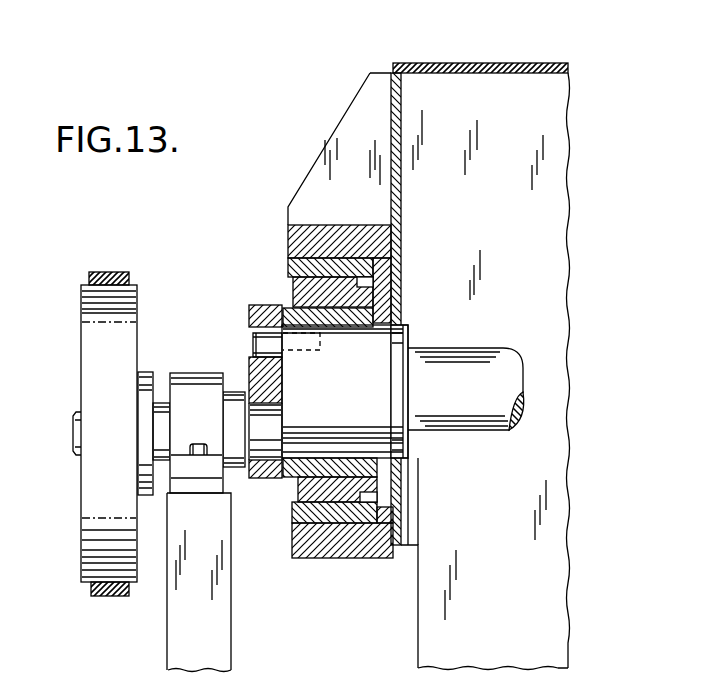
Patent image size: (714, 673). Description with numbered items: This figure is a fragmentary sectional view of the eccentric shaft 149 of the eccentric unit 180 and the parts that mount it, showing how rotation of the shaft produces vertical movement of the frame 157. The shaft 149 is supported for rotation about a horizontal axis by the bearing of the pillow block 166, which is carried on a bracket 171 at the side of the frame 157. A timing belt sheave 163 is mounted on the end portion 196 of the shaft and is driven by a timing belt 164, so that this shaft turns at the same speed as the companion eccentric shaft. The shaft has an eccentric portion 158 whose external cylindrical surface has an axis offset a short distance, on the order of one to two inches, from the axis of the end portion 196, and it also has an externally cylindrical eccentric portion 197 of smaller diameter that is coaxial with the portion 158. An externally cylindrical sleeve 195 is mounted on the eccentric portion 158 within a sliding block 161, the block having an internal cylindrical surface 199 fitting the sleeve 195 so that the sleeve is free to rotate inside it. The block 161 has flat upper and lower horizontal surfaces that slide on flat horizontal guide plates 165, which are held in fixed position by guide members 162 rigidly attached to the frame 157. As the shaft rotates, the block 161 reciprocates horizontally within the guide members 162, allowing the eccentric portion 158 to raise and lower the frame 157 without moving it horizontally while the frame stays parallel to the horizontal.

The eccentric shaft 149 is at (501, 361).
The frame 157 is at (467, 63).
The eccentric portion 158 is at (398, 383).
The sliding block 161 is at (296, 286).
The guide member 162 is at (342, 238).
The timing belt sheave 163 is at (90, 350).
The timing belt 164 is at (111, 271).
The guide plate 165 is at (298, 242).
The pillow block 166 is at (197, 372).
The bracket 171 is at (218, 638).
The eccentric unit 180 is at (386, 129).
The sleeve 195 is at (341, 318).
The end portion 196 is at (78, 435).
The eccentric portion of smaller diameter 197 is at (481, 424).
The internal cylindrical surface 199 is at (373, 317).